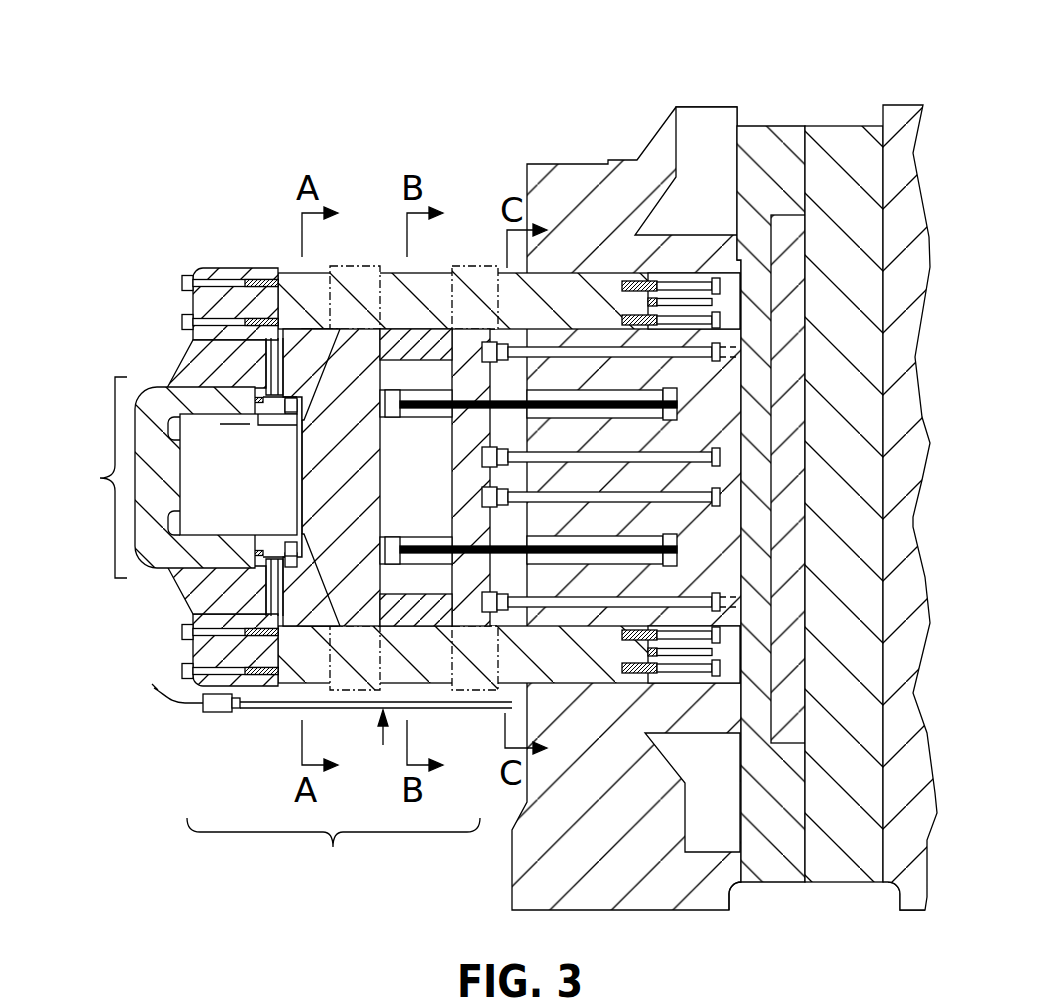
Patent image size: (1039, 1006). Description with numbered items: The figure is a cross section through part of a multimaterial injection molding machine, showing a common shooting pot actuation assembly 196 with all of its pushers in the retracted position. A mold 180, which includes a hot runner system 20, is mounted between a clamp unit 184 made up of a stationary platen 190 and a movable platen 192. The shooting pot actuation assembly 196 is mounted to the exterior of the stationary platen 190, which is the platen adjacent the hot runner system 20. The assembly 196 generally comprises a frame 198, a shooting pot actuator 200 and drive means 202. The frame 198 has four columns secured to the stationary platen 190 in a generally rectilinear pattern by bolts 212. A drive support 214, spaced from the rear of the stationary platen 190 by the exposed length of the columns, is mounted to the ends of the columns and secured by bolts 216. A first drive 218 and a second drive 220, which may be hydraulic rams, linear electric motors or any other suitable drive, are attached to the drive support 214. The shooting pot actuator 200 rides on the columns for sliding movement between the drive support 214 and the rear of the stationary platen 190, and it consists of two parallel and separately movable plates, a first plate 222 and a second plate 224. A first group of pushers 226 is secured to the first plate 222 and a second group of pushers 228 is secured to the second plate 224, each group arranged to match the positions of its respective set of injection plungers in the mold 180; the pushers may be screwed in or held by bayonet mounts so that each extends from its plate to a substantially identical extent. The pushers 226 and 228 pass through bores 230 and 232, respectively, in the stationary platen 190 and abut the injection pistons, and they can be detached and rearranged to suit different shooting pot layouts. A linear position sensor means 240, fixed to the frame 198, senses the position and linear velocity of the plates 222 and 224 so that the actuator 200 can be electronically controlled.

The hot runner system 20 is at (783, 745).
The mold 180 is at (792, 903).
The clamp unit 184 is at (880, 88).
The stationary platen 190 is at (648, 163).
The movable platen 192 is at (918, 100).
The common shooting pot actuation assembly 196 is at (383, 746).
The frame 198 is at (293, 280).
The shooting pot actuator 200 is at (333, 845).
The drive means 202 is at (178, 477).
The bolts 212 is at (690, 315).
The drive support 214 is at (165, 578).
The bolts 216 is at (182, 322).
The first drive 218 is at (290, 376).
The second drive 220 is at (195, 430).
The first plate 222 is at (480, 266).
The second plate 224 is at (368, 266).
The first group of pushers 226 is at (672, 357).
The second group of pushers 228 is at (612, 398).
The bores 230 is at (638, 342).
The bores 232 is at (572, 390).
The linear position sensor means 240 is at (213, 714).